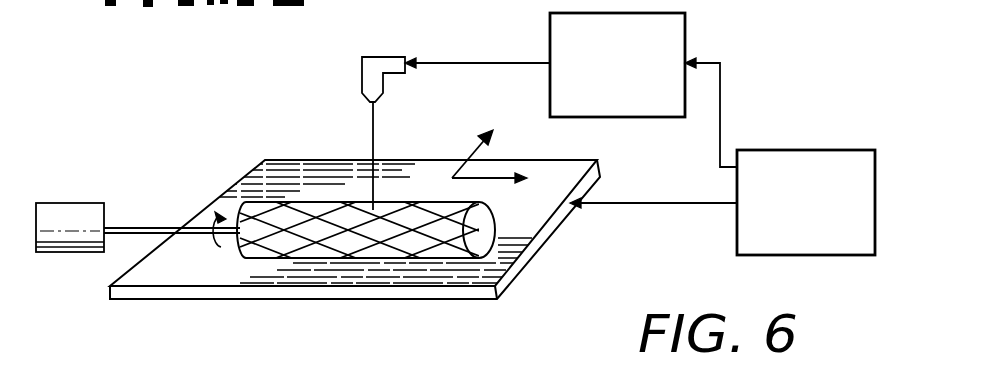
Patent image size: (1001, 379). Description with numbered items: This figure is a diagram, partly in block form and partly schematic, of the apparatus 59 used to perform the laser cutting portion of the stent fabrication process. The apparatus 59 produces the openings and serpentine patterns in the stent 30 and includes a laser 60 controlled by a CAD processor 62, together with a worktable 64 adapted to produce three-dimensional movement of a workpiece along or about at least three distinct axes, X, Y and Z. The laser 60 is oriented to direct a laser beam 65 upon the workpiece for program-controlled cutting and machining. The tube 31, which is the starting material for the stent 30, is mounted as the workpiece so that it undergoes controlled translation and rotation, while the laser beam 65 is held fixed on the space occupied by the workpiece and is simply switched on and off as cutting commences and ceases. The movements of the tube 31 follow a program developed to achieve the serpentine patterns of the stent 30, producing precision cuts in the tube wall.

The stent 30 is at (360, 260).
The tube 31 is at (280, 202).
The apparatus 59 is at (667, 265).
The laser 60 is at (688, 33).
The CAD processor 62 is at (797, 150).
The worktable 64 is at (230, 187).
The laser beam 65 is at (372, 140).